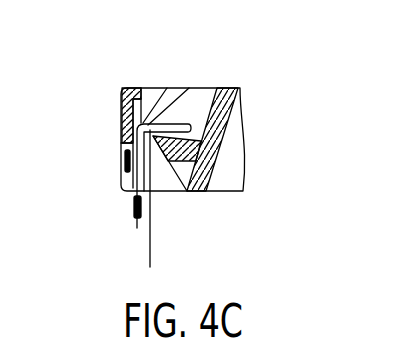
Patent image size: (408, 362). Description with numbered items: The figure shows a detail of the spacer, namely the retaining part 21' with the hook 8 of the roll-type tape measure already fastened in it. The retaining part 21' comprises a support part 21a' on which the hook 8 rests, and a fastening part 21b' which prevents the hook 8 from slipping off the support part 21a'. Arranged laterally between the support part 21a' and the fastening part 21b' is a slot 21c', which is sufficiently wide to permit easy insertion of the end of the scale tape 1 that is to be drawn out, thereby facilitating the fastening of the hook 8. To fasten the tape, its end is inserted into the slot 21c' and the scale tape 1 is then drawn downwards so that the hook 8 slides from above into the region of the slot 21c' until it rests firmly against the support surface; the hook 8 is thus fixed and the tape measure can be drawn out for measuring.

The retaining part 21' is at (184, 103).
The fastening part 21b' is at (119, 117).
The slot 21c' is at (162, 85).
The hook 8 is at (180, 102).
The support part 21a' is at (219, 148).
The scale tape 1 is at (166, 251).